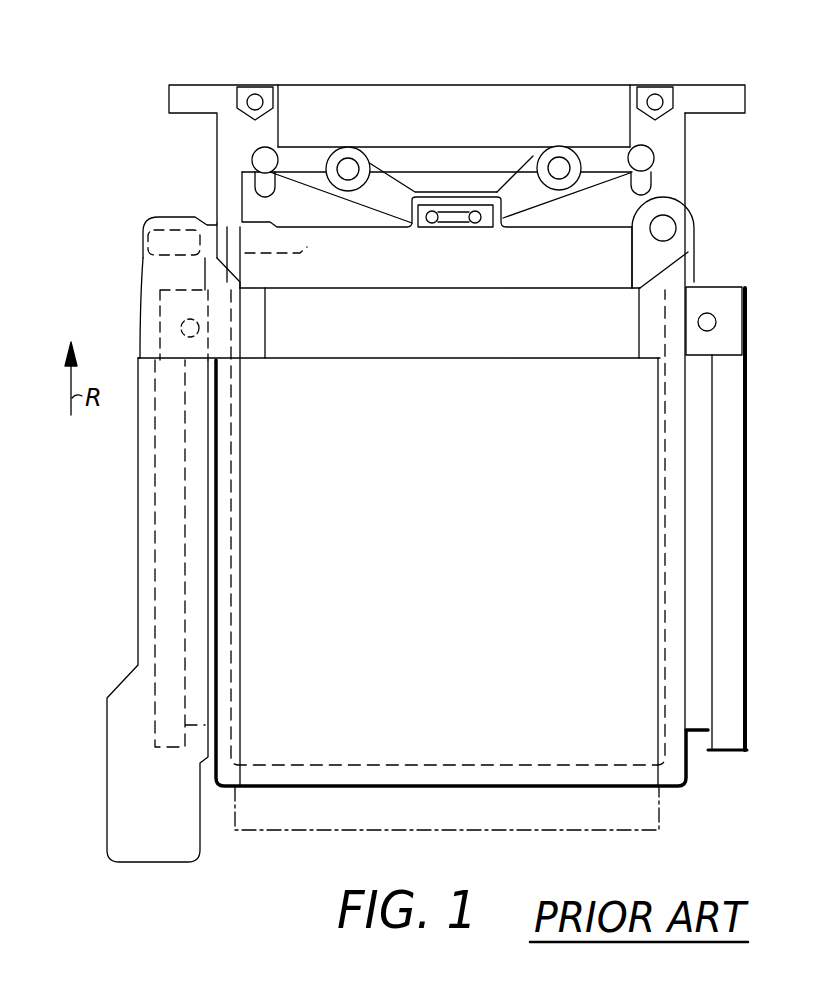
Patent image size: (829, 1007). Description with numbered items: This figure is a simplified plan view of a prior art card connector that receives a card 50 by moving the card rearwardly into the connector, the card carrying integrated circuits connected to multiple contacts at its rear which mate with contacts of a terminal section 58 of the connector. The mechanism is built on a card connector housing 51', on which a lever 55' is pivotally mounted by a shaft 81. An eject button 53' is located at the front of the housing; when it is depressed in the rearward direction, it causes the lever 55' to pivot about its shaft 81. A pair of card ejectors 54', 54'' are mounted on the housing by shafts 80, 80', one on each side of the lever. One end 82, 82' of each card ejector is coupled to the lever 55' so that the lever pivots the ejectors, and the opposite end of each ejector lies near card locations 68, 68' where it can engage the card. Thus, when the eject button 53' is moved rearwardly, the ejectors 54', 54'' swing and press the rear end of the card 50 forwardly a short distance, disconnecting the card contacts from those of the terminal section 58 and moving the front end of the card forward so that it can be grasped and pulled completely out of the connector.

The card 50 is at (660, 828).
The card connector housing 51' is at (502, 544).
The eject button 53' is at (123, 539).
The card ejector 54' is at (383, 215).
The card ejector 54'' is at (563, 215).
The lever 55' is at (399, 265).
The terminal section 58 is at (515, 85).
The card location 68 is at (210, 184).
The card location 68' is at (703, 184).
The shaft 80 is at (344, 107).
The shaft 80' is at (569, 106).
The shaft 81 is at (665, 228).
The end of card ejector 82 is at (445, 270).
The end of card ejector 82' is at (490, 273).